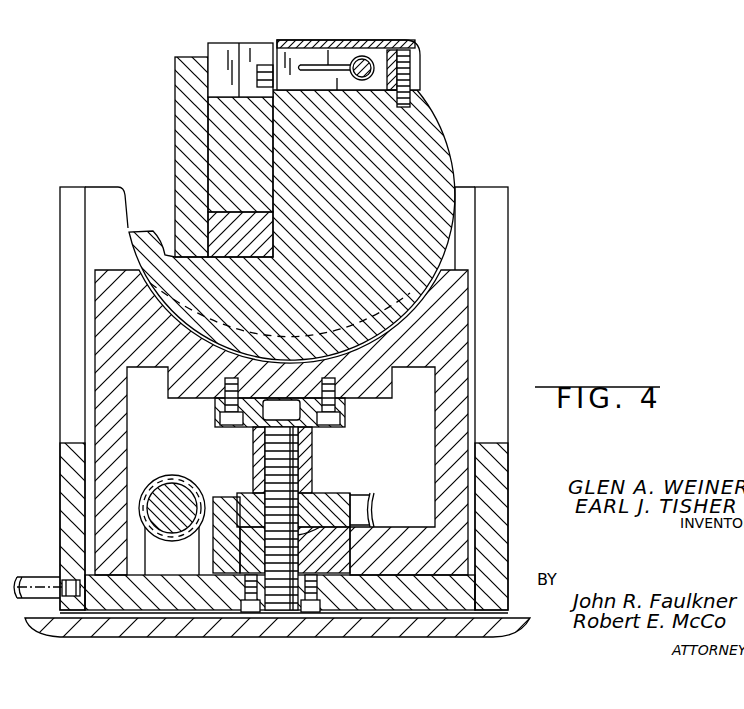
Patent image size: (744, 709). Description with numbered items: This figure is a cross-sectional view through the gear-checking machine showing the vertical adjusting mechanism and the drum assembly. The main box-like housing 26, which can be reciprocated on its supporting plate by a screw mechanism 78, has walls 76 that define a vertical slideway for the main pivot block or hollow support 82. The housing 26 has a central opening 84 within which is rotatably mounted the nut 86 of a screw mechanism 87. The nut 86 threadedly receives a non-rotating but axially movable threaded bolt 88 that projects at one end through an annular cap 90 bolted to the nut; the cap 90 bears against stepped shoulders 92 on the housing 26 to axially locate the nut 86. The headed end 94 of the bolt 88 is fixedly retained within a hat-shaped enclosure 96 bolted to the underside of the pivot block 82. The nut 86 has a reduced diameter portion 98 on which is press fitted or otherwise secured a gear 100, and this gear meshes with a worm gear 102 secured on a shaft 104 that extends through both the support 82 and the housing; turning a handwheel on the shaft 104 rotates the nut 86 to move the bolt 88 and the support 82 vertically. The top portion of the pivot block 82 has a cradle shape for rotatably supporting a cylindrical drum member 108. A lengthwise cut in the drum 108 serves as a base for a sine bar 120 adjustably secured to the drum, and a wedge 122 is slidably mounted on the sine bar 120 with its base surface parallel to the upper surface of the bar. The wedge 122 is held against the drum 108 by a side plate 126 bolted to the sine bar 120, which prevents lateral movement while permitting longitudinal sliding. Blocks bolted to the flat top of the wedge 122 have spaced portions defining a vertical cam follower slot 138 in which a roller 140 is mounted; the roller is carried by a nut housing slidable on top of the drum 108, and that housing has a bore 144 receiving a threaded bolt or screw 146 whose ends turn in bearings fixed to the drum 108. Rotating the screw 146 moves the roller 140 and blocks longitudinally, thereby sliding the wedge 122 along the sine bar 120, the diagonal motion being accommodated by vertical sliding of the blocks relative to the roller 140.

The main box-like housing 26 is at (57, 482).
The walls of the housing 76 is at (495, 480).
The screw mechanism 78 is at (28, 571).
The main pivot block 82 is at (414, 352).
The central opening 84 is at (350, 538).
The nut 86 is at (312, 487).
The screw mechanism 87 is at (354, 485).
The threaded bolt 88 is at (273, 612).
The annular cap 90 is at (348, 588).
The stepped shoulders 92 is at (372, 590).
The headed end 94 is at (220, 412).
The hat-shaped enclosure 96 is at (316, 422).
The reduced diameter portion 98 is at (253, 490).
The gear 100 is at (348, 512).
The worm gear 102 is at (182, 481).
The shaft 104 is at (168, 503).
The cylindrical member 108 is at (434, 165).
The sine bar 120 is at (217, 233).
The wedge 122 is at (223, 117).
The side plate 126 is at (183, 140).
The cam follower slot 138 is at (212, 46).
The roller 140 is at (263, 65).
The bore 144 is at (360, 57).
The threaded bolt 146 is at (372, 62).